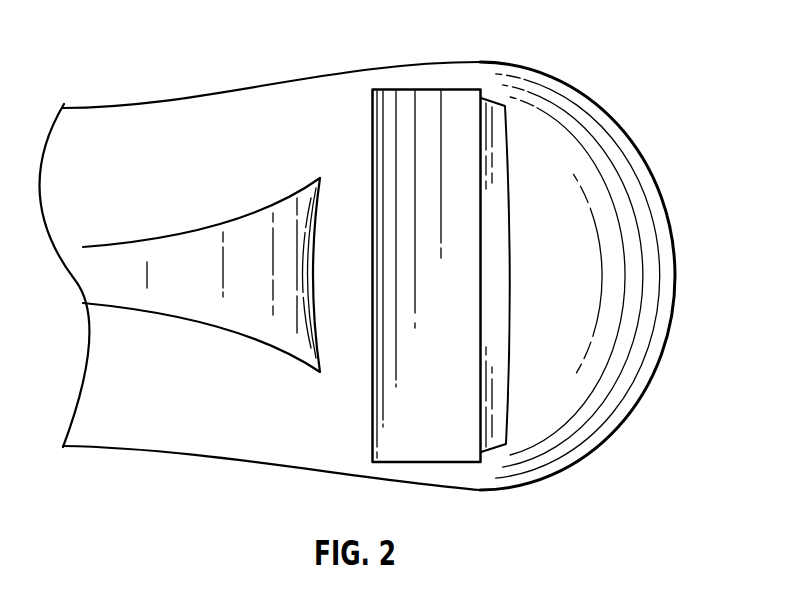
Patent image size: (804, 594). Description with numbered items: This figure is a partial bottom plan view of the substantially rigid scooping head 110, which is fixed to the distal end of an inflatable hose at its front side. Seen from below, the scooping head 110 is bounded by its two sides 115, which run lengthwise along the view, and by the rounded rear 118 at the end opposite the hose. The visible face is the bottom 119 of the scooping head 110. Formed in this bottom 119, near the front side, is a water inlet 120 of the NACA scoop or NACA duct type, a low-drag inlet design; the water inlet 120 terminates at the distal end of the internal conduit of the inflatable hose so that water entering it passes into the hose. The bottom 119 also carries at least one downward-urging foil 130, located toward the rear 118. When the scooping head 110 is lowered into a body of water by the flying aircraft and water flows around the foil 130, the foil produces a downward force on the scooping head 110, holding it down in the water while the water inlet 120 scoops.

The scooping head 110 is at (622, 49).
The sides 115 is at (213, 97).
The rear 118 is at (675, 281).
The bottom 119 is at (167, 397).
The water inlet 120 is at (298, 235).
The downward-urging foil 130 is at (450, 283).